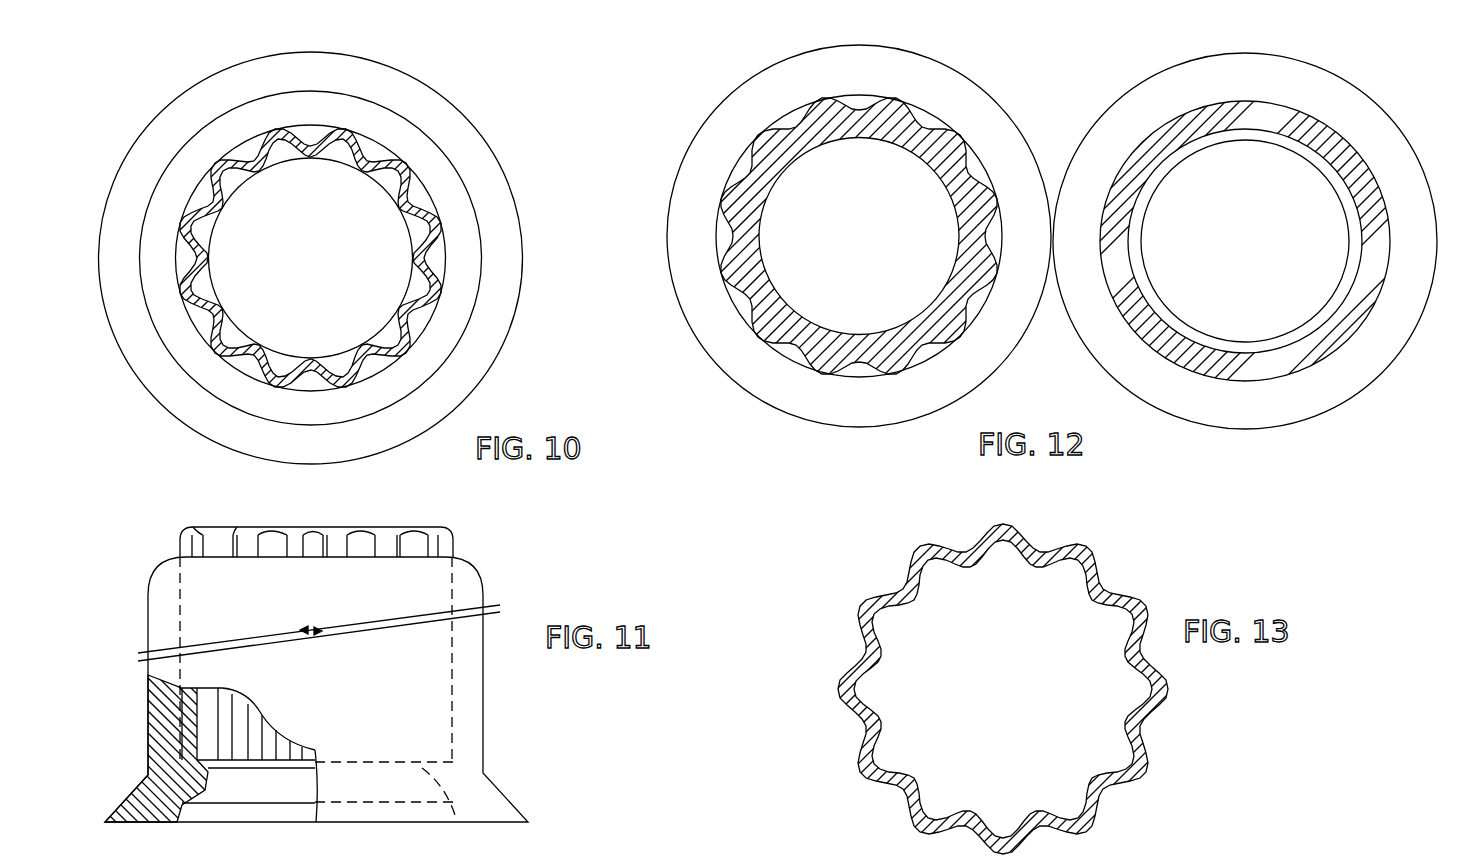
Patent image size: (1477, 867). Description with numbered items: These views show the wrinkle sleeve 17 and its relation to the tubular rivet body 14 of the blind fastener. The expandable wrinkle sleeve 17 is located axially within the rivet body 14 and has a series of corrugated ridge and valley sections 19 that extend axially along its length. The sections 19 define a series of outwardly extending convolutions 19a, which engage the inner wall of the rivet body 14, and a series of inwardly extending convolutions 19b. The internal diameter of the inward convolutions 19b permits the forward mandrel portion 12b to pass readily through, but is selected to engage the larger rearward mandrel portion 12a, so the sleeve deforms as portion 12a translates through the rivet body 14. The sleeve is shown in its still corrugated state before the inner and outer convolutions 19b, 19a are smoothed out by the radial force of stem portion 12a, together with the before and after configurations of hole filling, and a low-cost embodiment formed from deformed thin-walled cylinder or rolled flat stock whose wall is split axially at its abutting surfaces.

In FIG. 12, the first rearward end portion 12a is at (1268, 182).
In FIG. 10, the second forward end portion 12b is at (298, 130).
In FIG. 12, the second forward end portion 12b is at (880, 182).
In FIG. 10, the tubular rivet body 14 is at (162, 290).
In FIG. 12, the tubular rivet body 14 is at (705, 170).
In FIG. 10, the wrinkle sleeve 17 is at (388, 168).
In FIG. 12, the wrinkle sleeve 17 is at (775, 142).
In FIG. 10, the corrugated or ridge and valley sections 19 is at (228, 168).
In FIG. 10, the outwardly extending convolutions 19a is at (177, 262).
In FIG. 10, the inwardly extending convolutions 19b is at (275, 345).